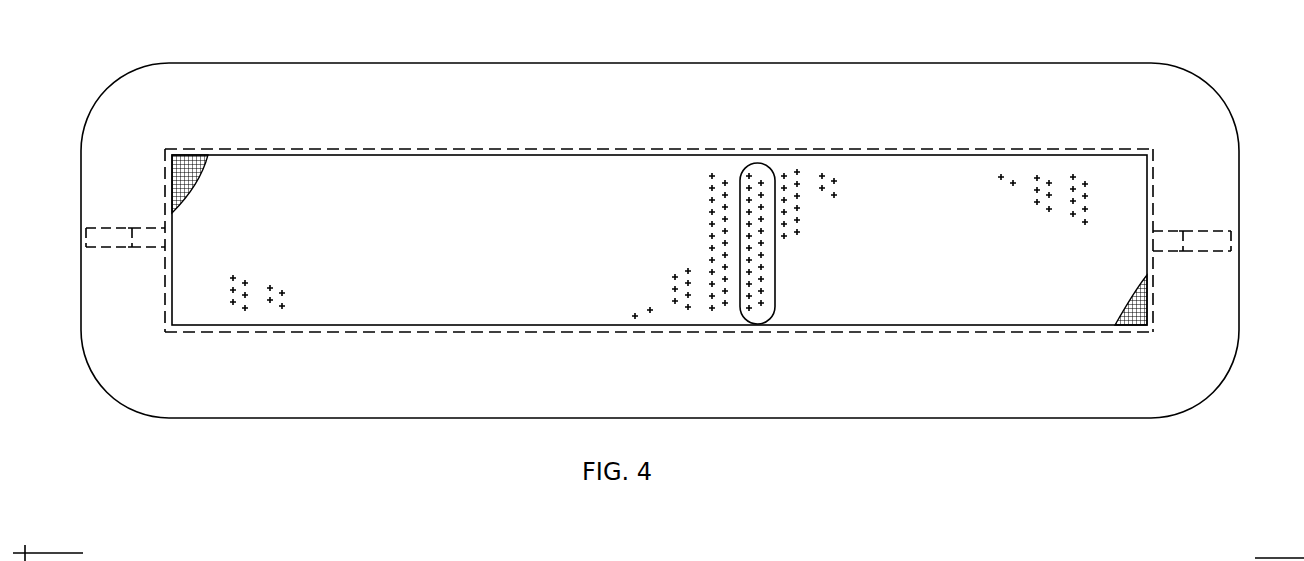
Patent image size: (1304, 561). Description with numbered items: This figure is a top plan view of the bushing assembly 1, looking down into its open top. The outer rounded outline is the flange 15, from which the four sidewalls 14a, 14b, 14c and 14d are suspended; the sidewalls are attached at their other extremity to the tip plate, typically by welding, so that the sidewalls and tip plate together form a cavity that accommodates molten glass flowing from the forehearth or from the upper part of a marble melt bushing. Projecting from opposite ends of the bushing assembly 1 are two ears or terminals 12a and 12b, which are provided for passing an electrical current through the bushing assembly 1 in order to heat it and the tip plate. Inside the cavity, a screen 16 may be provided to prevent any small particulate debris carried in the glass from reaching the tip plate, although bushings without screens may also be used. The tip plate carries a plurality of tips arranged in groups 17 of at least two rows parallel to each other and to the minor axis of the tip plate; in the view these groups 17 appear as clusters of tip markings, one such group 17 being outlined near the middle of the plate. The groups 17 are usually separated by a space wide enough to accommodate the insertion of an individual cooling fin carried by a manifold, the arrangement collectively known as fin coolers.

The bushing assembly 1 is at (1085, 56).
The ear or terminal 12a is at (105, 247).
The ear or terminal 12b is at (1213, 251).
The sidewall 14a is at (528, 333).
The sidewall 14b is at (1153, 196).
The sidewall 14c is at (632, 150).
The sidewall 14d is at (165, 172).
The flange 15 is at (1153, 417).
The screen 16 is at (1133, 300).
The group of tips 17 is at (771, 163).